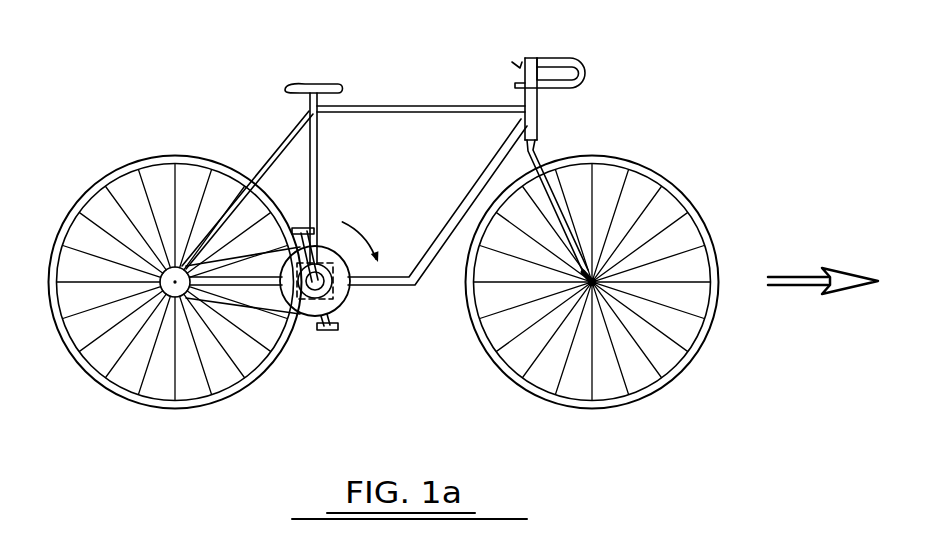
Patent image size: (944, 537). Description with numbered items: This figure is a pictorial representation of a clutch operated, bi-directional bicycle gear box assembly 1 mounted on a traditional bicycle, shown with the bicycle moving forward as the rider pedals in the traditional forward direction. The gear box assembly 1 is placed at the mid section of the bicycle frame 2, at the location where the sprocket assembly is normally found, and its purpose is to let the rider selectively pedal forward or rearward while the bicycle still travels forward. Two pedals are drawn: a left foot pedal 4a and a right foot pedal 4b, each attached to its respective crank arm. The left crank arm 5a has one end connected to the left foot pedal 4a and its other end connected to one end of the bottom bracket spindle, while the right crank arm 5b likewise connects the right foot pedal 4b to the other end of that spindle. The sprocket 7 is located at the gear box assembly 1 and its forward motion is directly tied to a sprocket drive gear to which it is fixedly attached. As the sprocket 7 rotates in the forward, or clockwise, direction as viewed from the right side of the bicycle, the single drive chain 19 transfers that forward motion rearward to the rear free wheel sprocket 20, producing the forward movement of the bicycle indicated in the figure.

The gear box assembly 1 is at (340, 282).
The bicycle frame 2 is at (320, 150).
The left foot pedal 4a is at (322, 336).
The right foot pedal 4b is at (306, 226).
The left crank arm 5a is at (316, 320).
The right crank arm 5b is at (322, 244).
The sprocket 7 is at (344, 313).
The single drive chain 19 is at (237, 247).
The rear free wheel sprocket 20 is at (128, 170).